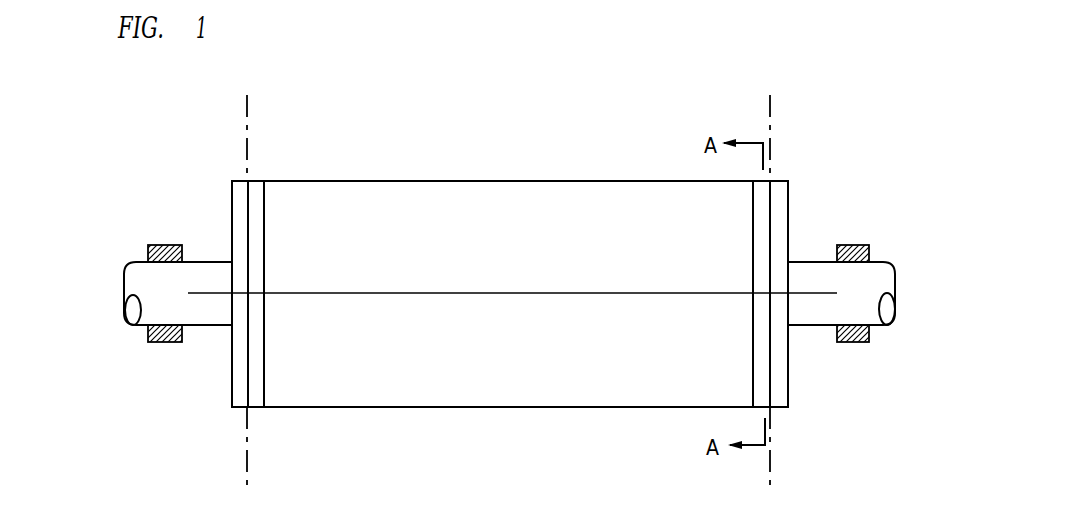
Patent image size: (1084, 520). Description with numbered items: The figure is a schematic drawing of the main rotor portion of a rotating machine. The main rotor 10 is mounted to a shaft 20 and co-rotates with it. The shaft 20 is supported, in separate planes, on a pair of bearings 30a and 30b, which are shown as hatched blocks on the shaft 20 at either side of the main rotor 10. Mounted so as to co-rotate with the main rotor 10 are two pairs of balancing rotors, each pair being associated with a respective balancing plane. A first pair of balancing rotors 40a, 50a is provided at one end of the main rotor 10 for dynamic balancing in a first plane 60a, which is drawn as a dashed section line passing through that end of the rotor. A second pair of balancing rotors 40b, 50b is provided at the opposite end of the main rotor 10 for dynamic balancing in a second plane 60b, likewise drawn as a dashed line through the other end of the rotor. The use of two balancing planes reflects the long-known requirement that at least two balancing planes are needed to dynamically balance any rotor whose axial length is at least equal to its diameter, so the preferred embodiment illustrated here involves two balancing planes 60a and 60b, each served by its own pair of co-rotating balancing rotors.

The main rotor 10 is at (580, 189).
The shaft 20 is at (863, 313).
The bearing 30a is at (150, 345).
The bearing 30b is at (855, 243).
The balancing rotor 40a is at (232, 395).
The balancing rotor 40b is at (788, 222).
The balancing rotor 50a is at (264, 240).
The balancing rotor 50b is at (753, 393).
The balancing plane 60a is at (247, 112).
The balancing plane 60b is at (770, 112).